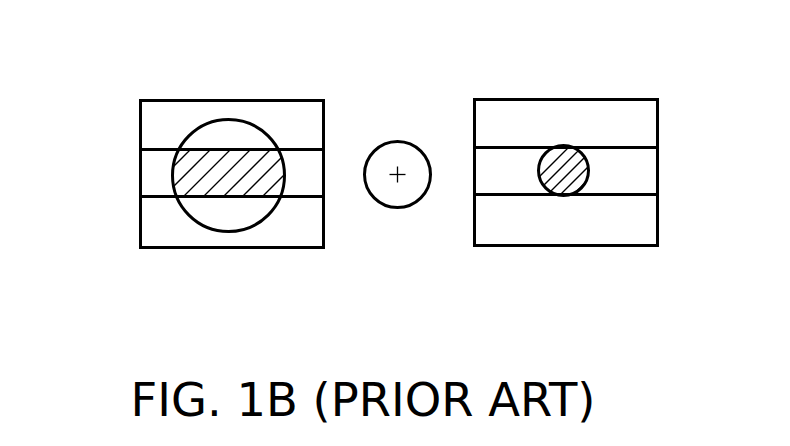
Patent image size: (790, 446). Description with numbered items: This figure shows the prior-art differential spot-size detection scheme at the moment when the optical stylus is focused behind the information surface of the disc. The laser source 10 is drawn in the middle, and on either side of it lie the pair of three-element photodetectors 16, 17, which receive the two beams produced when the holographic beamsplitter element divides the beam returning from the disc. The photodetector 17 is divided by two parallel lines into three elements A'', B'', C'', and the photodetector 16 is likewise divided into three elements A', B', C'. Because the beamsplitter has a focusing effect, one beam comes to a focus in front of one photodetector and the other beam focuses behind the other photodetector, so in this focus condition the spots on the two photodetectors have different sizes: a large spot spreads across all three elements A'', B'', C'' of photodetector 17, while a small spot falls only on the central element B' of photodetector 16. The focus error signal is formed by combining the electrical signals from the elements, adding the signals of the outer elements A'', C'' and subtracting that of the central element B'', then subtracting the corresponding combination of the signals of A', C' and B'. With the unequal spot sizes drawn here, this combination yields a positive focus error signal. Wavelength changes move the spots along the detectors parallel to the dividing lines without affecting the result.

The laser source 10 is at (404, 141).
The 3-element photodetector 16 is at (613, 245).
The 3-element photodetector 17 is at (280, 247).
The photodetector element A'' is at (202, 124).
The photodetector element B'' is at (205, 176).
The photodetector element C'' is at (202, 222).
The photodetector element A' is at (607, 123).
The photodetector element B' is at (608, 171).
The photodetector element C' is at (608, 220).